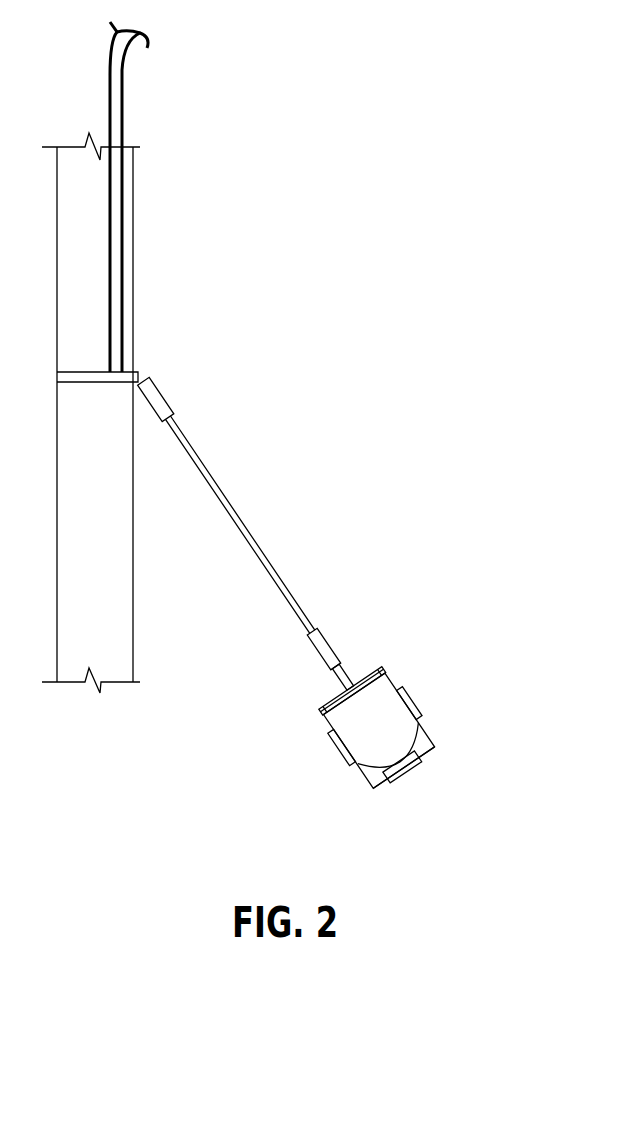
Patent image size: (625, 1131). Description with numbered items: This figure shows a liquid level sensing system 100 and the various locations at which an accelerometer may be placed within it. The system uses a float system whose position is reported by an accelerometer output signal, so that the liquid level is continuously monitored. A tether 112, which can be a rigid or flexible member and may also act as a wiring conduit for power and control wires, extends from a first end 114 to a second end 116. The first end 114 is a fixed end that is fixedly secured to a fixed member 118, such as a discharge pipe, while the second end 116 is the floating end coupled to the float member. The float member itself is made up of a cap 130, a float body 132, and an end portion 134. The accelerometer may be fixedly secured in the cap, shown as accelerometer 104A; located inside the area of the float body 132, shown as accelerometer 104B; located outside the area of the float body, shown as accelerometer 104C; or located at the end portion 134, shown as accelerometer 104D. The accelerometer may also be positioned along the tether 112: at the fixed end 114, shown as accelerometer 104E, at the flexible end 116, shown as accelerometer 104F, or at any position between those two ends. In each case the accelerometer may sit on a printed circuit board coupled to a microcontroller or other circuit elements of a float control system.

The liquid level sensing system 100 is at (427, 278).
The fixed member 118 is at (137, 265).
The first end 114 is at (142, 363).
The accelerometer 104E is at (167, 393).
The tether 112 is at (267, 547).
The accelerometer 104F is at (308, 643).
The second end 116 is at (323, 677).
The accelerometer 104A is at (360, 672).
The cap 130 is at (315, 702).
The accelerometer 104B is at (337, 753).
The float body 132 is at (322, 723).
The accelerometer 104C is at (417, 700).
The accelerometer 104D is at (410, 770).
The end portion 134 is at (357, 786).